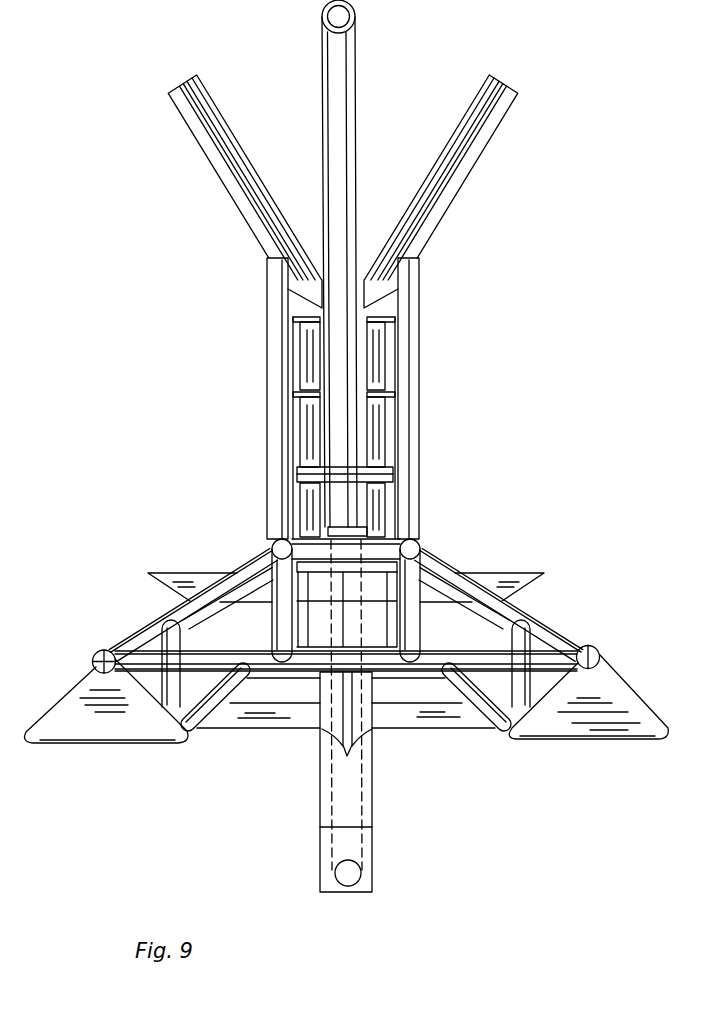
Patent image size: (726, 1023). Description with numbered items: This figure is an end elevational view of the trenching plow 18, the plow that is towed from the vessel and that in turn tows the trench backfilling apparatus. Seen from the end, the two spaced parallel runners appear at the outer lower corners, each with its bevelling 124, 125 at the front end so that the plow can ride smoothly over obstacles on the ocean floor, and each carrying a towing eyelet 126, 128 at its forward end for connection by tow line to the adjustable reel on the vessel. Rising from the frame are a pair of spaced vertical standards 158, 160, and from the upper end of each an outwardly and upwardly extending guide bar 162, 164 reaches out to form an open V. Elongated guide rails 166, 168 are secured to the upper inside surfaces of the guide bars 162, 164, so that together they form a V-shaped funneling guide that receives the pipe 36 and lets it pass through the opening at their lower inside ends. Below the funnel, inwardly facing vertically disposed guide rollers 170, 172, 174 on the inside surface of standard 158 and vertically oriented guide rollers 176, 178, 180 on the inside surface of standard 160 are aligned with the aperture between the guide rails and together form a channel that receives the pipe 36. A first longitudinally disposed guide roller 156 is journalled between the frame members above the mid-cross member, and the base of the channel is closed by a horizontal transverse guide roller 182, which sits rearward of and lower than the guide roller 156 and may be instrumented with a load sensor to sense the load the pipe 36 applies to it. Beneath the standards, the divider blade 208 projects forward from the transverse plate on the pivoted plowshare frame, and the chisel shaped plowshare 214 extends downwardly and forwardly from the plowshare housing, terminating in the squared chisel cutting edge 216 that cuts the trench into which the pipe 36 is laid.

The trenching plow 18 is at (498, 529).
The pipe 36 is at (355, 83).
The bevelling 124 is at (100, 748).
The bevelling 125 is at (608, 740).
The towing eyelet 126 is at (97, 659).
The towing eyelet 128 is at (599, 652).
The first longitudinally disposed guide roller 156 is at (350, 461).
The vertical standard 158 is at (268, 287).
The vertical standard 160 is at (421, 290).
The guide bar 162 is at (207, 156).
The guide bar 164 is at (469, 179).
The guide rail 166 is at (230, 136).
The guide rail 168 is at (462, 121).
The guide roller 170 is at (303, 353).
The guide roller 172 is at (303, 419).
The guide roller 174 is at (305, 500).
The guide roller 176 is at (384, 362).
The guide roller 178 is at (386, 418).
The guide roller 180 is at (385, 512).
The horizontal transverse guide roller 182 is at (342, 530).
The divider blade 208 is at (352, 748).
The chisel shaped plowshare 214 is at (361, 852).
The squared chisel cutting edge 216 is at (342, 894).